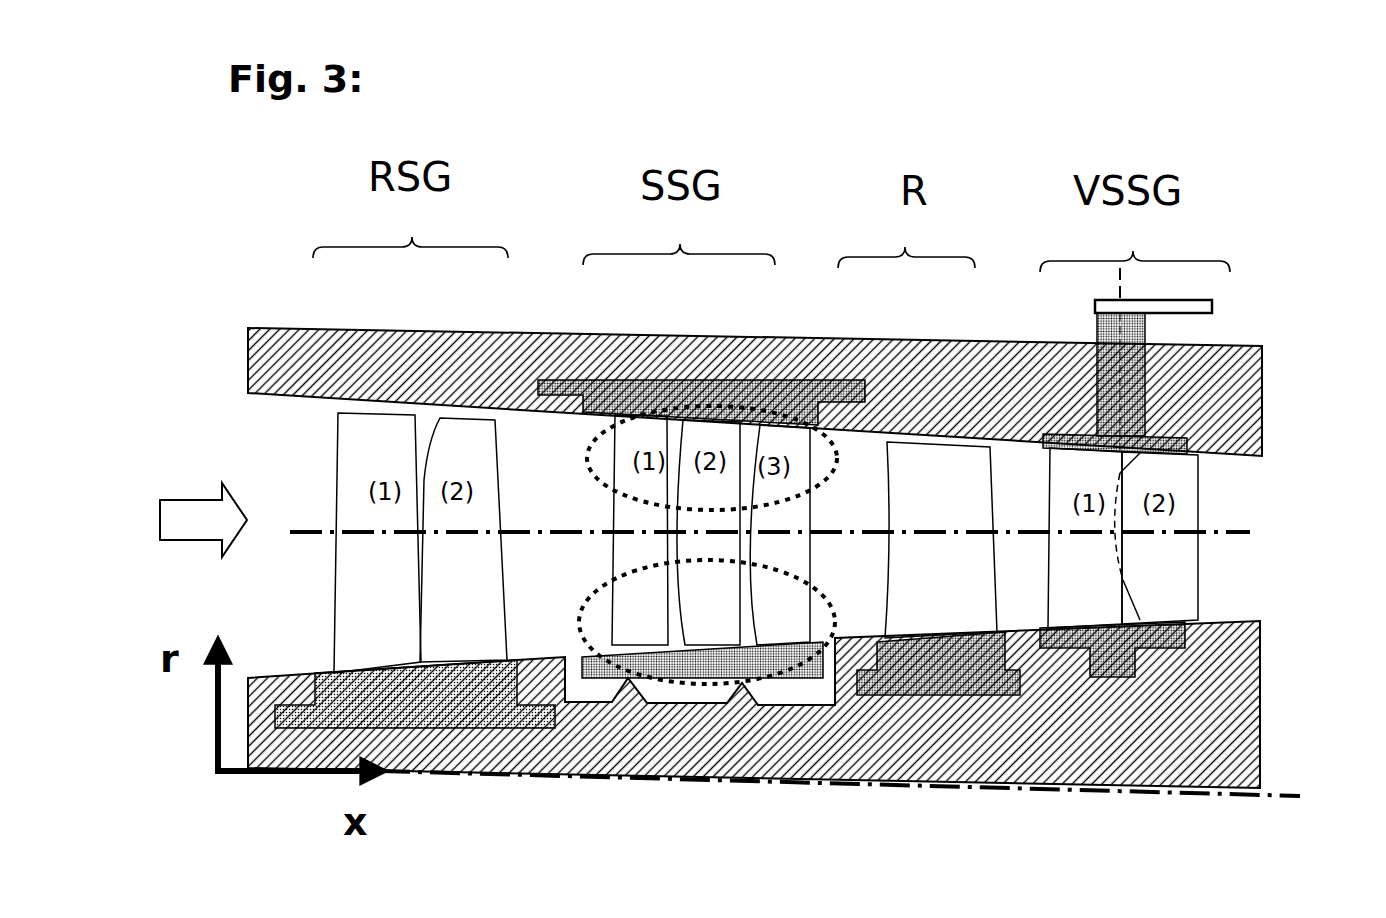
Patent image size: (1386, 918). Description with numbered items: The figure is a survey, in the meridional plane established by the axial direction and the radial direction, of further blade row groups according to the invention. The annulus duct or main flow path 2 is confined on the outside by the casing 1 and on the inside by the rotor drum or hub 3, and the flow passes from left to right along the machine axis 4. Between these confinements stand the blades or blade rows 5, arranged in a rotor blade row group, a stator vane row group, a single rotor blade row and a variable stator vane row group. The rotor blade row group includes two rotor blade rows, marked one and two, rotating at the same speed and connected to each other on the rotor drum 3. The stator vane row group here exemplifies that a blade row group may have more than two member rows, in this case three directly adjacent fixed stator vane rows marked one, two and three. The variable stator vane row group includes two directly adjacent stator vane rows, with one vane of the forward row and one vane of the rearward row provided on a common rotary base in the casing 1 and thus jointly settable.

The casing 1 is at (1245, 416).
The annulus duct/main flow path 2 is at (1280, 571).
The rotor drum (hub) 3 is at (1238, 718).
The machine axis 4 is at (1288, 797).
The blade/blade row 5 is at (362, 590).